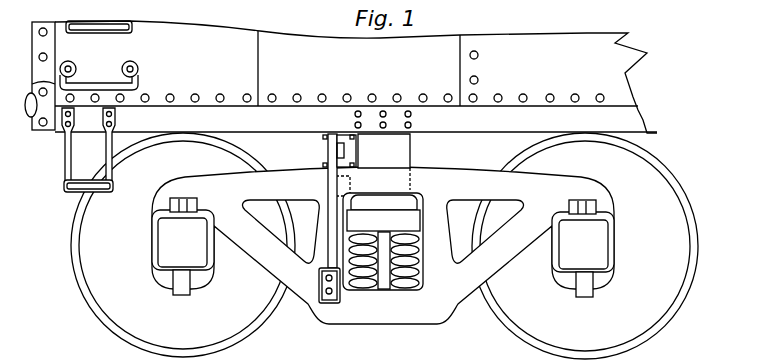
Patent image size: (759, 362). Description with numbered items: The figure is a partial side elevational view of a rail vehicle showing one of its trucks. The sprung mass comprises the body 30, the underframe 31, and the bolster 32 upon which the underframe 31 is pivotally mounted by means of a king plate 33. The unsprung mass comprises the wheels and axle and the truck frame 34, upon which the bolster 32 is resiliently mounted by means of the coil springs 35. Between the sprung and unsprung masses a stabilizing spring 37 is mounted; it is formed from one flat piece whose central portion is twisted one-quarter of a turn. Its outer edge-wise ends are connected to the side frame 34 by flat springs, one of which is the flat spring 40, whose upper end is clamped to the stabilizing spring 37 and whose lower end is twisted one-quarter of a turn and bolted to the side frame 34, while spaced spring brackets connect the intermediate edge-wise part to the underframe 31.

The body 30 is at (375, 66).
The underframe 31 is at (406, 158).
The bolster 32 is at (404, 222).
The king plate 33 is at (372, 206).
The truck frame 34 is at (428, 307).
The coil springs 35 is at (367, 288).
The stabilizing spring 37 is at (336, 152).
The flat spring 40 is at (328, 178).